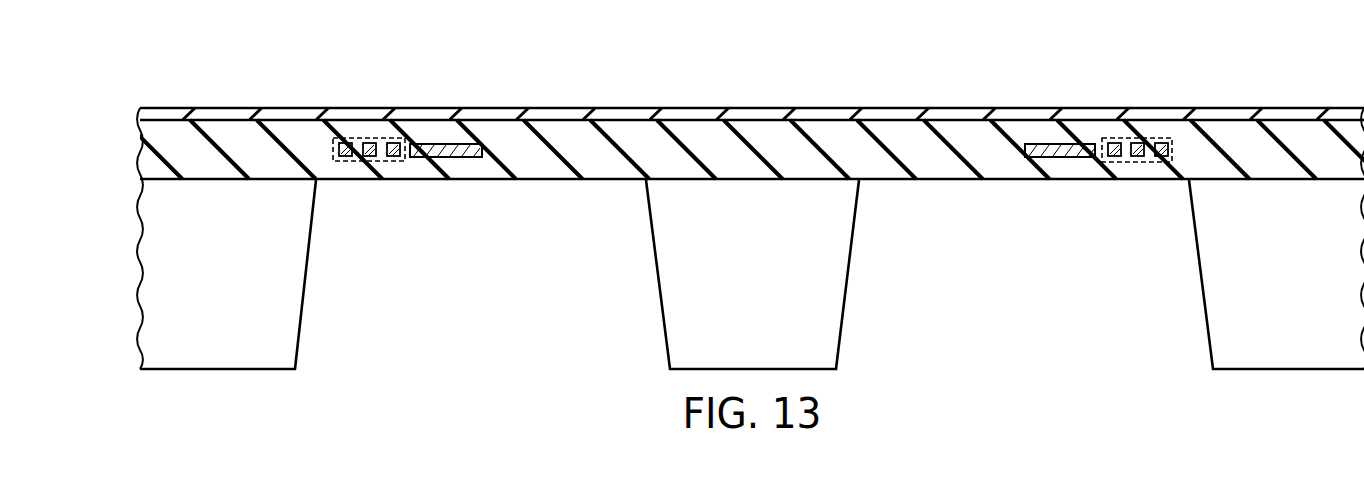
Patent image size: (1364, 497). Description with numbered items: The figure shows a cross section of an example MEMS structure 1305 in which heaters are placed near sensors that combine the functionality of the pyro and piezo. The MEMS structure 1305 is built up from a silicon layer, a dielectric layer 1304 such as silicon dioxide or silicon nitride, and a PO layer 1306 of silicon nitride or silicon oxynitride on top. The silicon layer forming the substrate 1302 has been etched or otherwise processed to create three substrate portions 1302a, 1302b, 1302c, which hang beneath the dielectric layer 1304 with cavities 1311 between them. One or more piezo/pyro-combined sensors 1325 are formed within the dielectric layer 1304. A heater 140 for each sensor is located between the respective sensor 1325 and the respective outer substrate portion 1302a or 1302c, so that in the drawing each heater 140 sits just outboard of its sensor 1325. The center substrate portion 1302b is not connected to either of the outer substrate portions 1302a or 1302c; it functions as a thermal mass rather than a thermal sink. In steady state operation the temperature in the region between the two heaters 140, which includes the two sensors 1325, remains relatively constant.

The MEMS structure 1305 is at (850, 76).
The top layer 1306 is at (142, 113).
The dielectric layer 1304 is at (142, 152).
The heater 140 is at (358, 130).
The piezo/pyro-combined sensor 1325 is at (432, 143).
The substrate 1302 is at (705, 271).
The substrate portion 1302a is at (208, 360).
The center substrate portion 1302b is at (838, 275).
The substrate portion 1302c is at (1298, 358).
The cavity 1311 is at (479, 367).